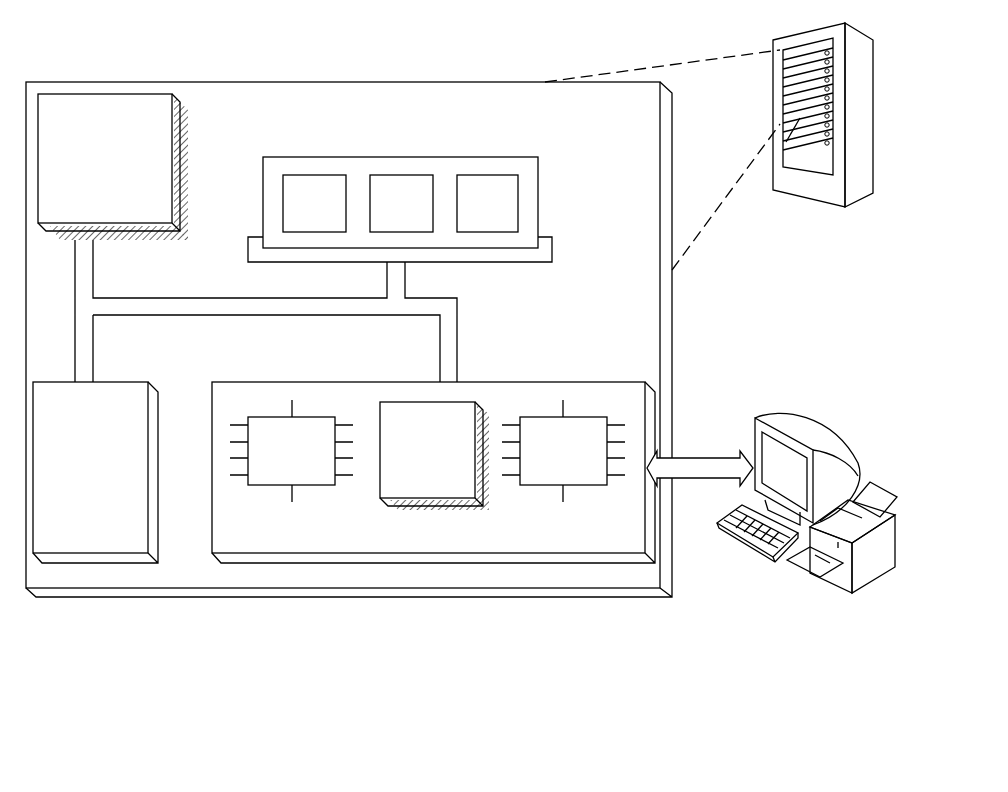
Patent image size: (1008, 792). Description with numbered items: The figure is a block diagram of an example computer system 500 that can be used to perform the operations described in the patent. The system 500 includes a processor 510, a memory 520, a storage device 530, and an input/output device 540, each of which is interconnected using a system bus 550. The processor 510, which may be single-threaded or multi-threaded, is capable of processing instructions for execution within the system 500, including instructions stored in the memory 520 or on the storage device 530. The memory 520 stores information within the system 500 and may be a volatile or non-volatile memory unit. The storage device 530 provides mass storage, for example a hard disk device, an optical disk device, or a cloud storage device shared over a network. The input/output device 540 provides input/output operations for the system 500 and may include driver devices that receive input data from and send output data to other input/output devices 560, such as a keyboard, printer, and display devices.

The computer system 500 is at (151, 60).
The processor 510 is at (113, 167).
The memory 520 is at (538, 205).
The storage device 530 is at (95, 472).
The input/output device 540 is at (603, 381).
The system bus 550 is at (263, 315).
The input/output devices 560 is at (755, 420).